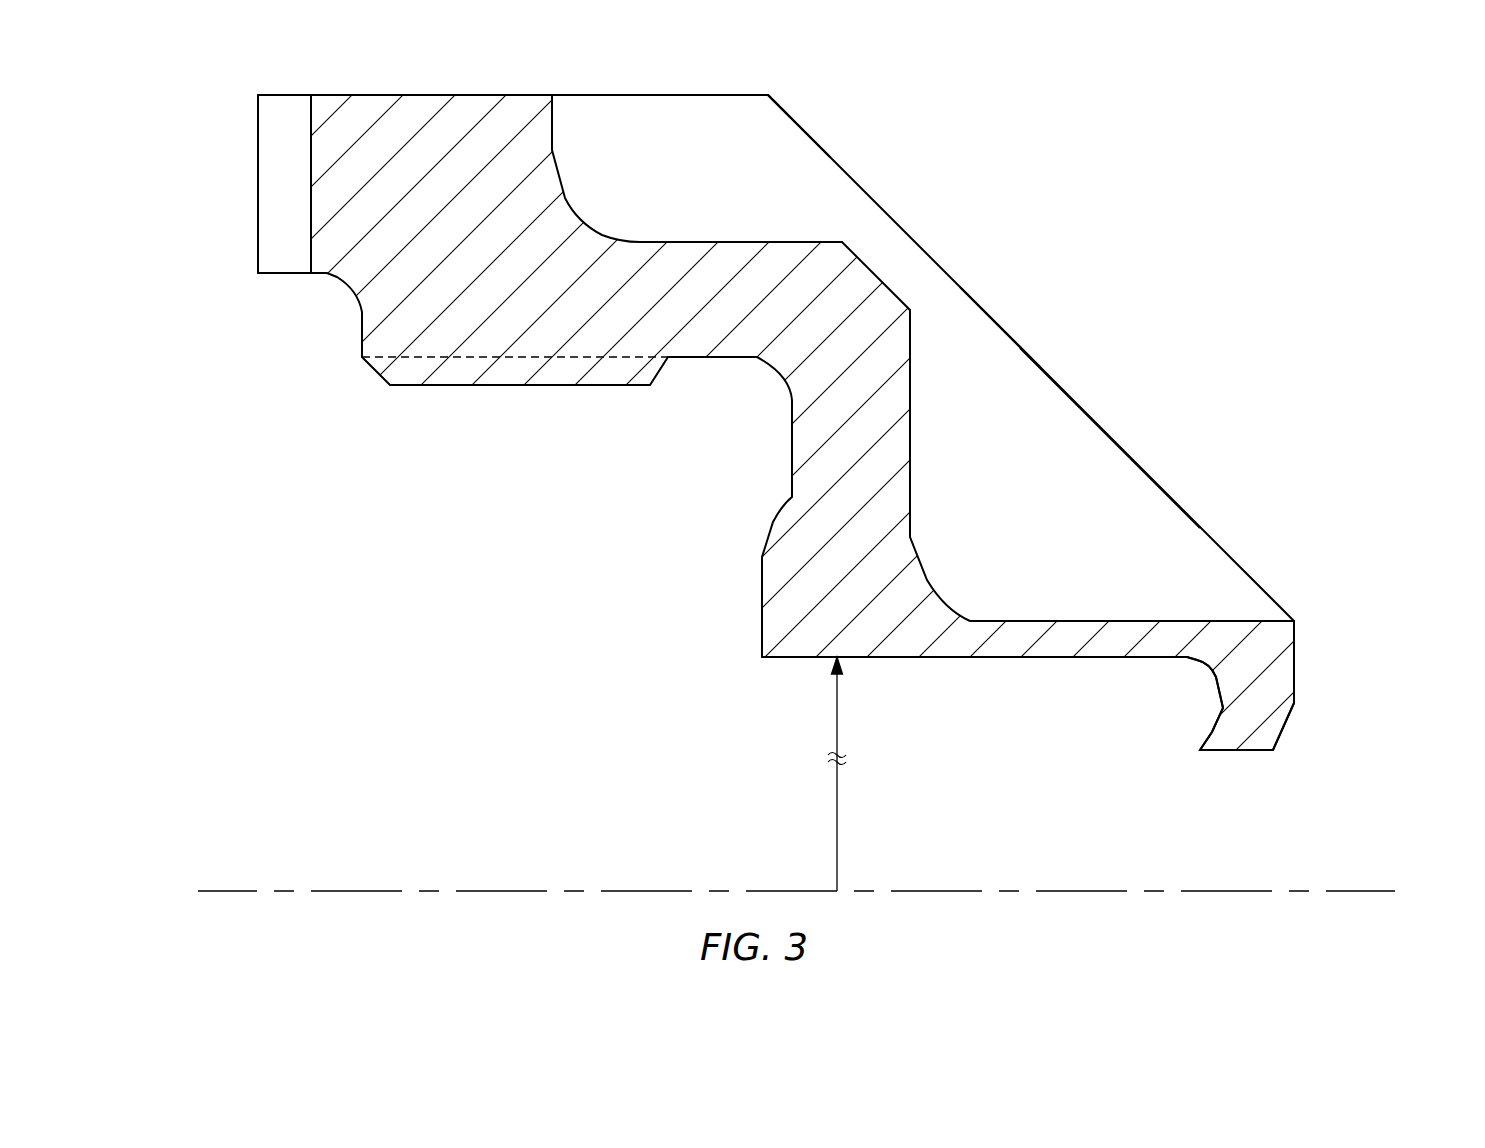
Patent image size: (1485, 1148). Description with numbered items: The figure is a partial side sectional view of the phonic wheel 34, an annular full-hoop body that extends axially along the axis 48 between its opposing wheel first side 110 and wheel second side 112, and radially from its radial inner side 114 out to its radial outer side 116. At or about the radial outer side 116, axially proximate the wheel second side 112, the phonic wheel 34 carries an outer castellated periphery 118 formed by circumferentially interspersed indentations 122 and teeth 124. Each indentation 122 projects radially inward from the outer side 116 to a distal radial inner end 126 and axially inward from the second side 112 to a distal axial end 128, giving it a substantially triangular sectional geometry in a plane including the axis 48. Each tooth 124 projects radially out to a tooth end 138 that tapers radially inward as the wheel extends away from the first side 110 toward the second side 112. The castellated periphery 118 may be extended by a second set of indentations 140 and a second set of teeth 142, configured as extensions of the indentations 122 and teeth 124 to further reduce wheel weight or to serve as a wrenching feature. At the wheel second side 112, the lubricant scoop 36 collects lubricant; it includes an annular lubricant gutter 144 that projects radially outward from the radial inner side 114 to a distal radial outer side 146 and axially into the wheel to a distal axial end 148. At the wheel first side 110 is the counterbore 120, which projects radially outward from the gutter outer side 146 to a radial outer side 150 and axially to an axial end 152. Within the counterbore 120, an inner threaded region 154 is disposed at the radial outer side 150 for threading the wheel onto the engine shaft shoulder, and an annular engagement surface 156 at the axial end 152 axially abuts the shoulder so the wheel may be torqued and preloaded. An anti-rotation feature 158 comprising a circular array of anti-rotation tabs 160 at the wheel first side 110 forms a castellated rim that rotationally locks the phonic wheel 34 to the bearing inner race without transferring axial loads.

The phonic wheel 34 is at (1218, 157).
The lubricant scoop 36 is at (1341, 730).
The axis 48 is at (238, 891).
The wheel first side 110 is at (258, 168).
The wheel second side 112 is at (1294, 662).
The radial inner side 114 is at (1237, 750).
The radial outer side 116 is at (422, 95).
The outer castellated periphery 118 is at (1065, 299).
The counterbore 120 is at (537, 516).
The indentation 122 is at (1112, 499).
The tooth 124 is at (1110, 415).
The distal radial inner end 126 is at (1072, 621).
The distal axial end 128 is at (910, 482).
The tooth end 138 is at (1047, 377).
The second set of indentations 140 is at (774, 165).
The second set of teeth 142 is at (795, 92).
The lubricant gutter 144 is at (1044, 730).
The distal radial outer side 146 is at (910, 657).
The distal axial end 148 is at (1223, 703).
The radial outer side 150 is at (692, 358).
The axial end 152 is at (788, 452).
The inner threaded region 154 is at (500, 387).
The engagement surface 156 is at (762, 620).
The anti-rotation feature 158 is at (222, 255).
The anti-rotation tabs 160 is at (258, 140).